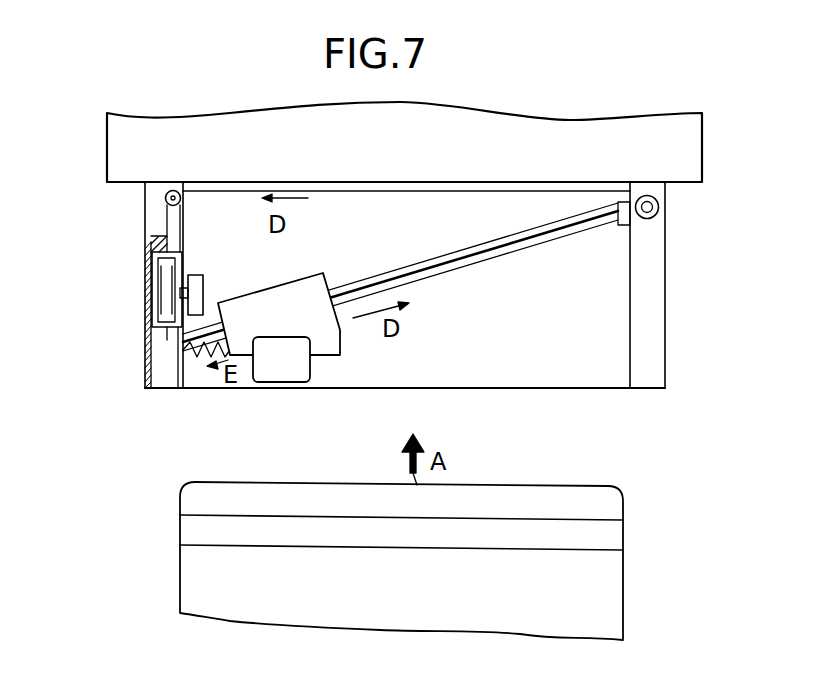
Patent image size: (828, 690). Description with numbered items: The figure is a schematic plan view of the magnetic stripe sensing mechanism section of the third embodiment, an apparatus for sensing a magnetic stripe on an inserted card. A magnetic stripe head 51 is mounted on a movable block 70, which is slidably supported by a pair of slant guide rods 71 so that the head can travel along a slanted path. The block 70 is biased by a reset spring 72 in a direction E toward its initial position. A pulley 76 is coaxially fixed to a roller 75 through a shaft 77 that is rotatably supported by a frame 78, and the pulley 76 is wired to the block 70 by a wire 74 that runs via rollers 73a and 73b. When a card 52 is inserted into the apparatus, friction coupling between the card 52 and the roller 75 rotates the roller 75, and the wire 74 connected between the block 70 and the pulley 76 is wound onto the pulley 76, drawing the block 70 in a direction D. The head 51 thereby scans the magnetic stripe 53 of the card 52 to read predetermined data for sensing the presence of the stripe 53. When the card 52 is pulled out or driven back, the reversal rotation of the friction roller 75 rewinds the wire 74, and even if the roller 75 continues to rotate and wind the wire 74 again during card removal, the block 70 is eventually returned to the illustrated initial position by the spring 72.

The magnetic stripe head 51 is at (287, 376).
The card 52 is at (192, 587).
The magnetic stripe 53 is at (190, 529).
The movable block 70 is at (315, 286).
The slant guide rods 71 is at (387, 277).
The reset spring 72 is at (205, 360).
The roller 73a is at (656, 214).
The roller 73b is at (165, 197).
The wire 74 is at (165, 222).
The roller 75 is at (175, 328).
The pulley 76 is at (152, 292).
The shaft 77 is at (192, 277).
The frame 78 is at (652, 350).